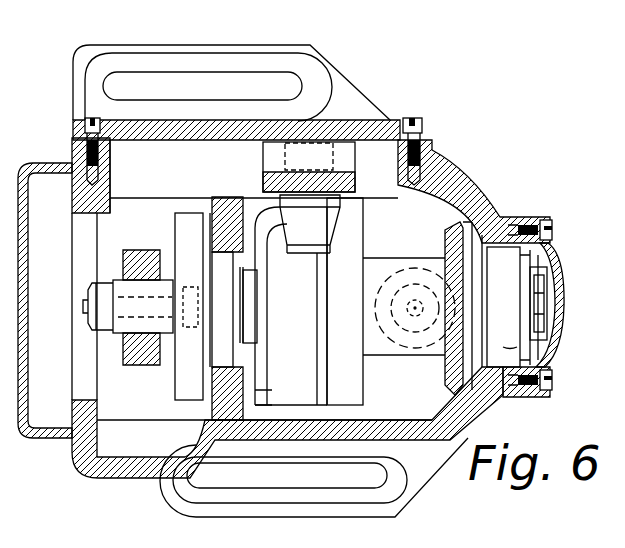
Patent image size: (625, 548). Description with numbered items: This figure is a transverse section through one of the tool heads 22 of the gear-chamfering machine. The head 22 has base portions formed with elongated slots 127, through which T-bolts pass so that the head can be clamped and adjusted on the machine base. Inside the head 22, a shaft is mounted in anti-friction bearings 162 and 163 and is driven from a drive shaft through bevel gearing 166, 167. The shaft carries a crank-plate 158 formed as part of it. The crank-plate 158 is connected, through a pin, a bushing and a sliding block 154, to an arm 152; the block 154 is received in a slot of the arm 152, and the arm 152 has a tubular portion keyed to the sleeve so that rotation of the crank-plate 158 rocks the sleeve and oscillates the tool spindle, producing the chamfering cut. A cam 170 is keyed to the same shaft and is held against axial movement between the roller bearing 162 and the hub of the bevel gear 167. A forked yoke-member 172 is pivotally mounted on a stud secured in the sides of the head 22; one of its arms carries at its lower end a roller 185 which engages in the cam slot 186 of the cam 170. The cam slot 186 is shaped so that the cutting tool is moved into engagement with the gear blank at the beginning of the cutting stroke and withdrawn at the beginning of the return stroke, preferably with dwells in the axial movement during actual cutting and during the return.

The tool head 22 is at (128, 475).
The elongated slots 127 is at (273, 82).
The arm 152 is at (147, 367).
The sliding block 154 is at (123, 340).
The crank-plate 158 is at (185, 227).
The anti-friction bearing 162 is at (215, 437).
The anti-friction bearing 163 is at (556, 347).
The bevel gear 166 is at (405, 270).
The bevel gear 167 is at (452, 235).
The cam 170 is at (353, 383).
The yoke-member 172 is at (345, 163).
The roller 185 is at (325, 214).
The cam slot 186 is at (302, 377).